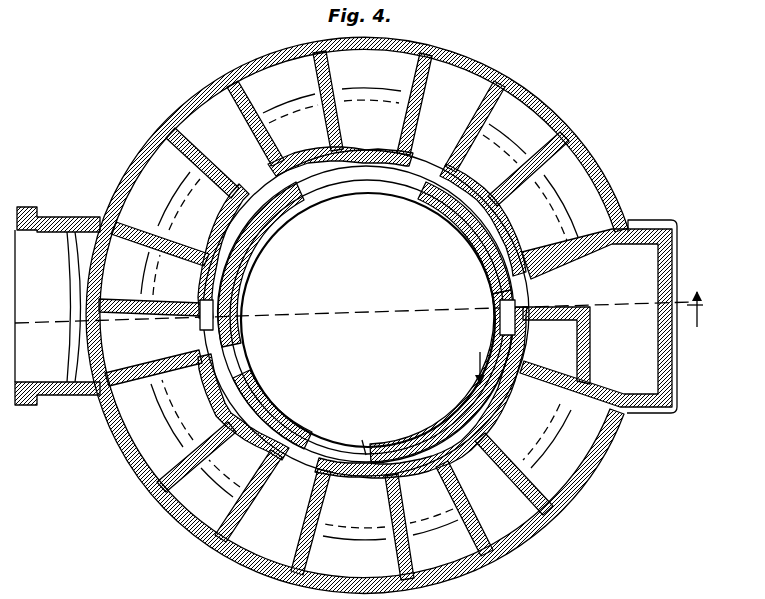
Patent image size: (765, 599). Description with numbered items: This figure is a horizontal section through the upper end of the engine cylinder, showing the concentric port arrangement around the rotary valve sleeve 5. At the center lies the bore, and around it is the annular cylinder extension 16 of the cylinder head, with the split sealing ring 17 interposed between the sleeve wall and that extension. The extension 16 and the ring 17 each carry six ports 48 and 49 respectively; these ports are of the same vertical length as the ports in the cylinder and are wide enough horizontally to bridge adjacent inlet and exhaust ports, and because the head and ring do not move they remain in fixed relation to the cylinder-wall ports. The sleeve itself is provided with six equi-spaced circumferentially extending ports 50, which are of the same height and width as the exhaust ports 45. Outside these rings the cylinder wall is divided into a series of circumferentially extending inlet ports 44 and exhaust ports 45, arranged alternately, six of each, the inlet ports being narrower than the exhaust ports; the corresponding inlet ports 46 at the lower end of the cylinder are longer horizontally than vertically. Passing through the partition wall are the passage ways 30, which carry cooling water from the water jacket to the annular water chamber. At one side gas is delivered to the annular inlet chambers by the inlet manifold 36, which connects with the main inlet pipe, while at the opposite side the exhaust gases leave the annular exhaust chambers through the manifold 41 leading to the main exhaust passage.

The sleeve 5 is at (312, 428).
The cylinder extension 16 is at (362, 312).
The split sealing ring 17 is at (340, 185).
The passage ways 30 is at (620, 150).
The inlet manifold 36 is at (630, 348).
The manifold 41 is at (78, 372).
The inlet ports 44 is at (260, 178).
The exhaust ports 45 is at (364, 314).
The inlet ports 46 is at (364, 435).
The ports 48 is at (263, 227).
The ports 49 is at (257, 243).
The ports 50 is at (233, 303).